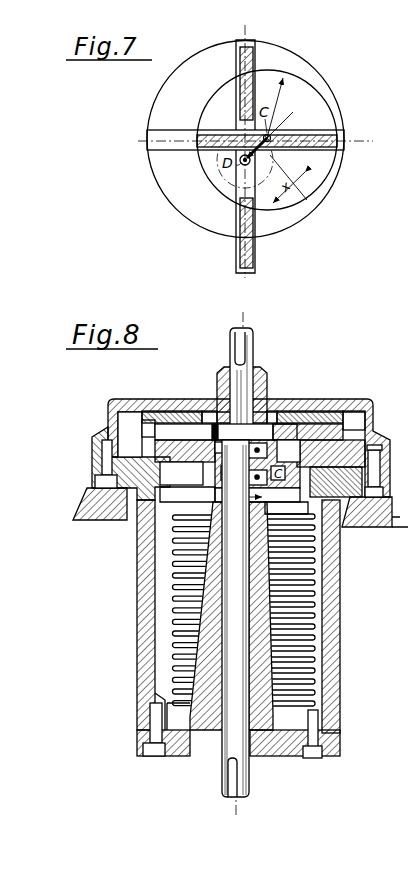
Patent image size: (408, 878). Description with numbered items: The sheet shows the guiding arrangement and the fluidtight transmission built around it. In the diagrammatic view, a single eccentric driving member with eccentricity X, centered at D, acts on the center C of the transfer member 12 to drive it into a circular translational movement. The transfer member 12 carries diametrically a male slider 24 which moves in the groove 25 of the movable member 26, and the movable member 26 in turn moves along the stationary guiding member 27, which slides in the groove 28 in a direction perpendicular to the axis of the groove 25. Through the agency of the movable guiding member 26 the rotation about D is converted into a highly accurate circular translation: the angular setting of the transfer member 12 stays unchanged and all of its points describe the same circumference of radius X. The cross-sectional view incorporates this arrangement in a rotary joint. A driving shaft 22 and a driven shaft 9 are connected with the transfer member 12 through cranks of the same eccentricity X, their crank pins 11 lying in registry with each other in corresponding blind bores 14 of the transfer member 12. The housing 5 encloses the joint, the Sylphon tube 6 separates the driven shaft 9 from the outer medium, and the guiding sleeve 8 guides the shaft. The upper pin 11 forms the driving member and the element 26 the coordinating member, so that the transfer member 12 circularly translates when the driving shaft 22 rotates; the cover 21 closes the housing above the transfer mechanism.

In FIG. 8, the housing 5 is at (145, 547).
In FIG. 8, the Sylphon tube 6 is at (182, 588).
In FIG. 8, the guiding sleeve 8 is at (210, 652).
In FIG. 8, the driven shaft 9 is at (233, 562).
In FIG. 8, the crank pin 11 is at (227, 471).
In FIG. 7, the transfer member 12 is at (327, 107).
In FIG. 8, the transfer member 12 is at (365, 446).
In FIG. 8, the blind bore 14 is at (273, 463).
In FIG. 8, the cover 21 is at (150, 402).
In FIG. 8, the driving shaft 22 is at (252, 340).
In FIG. 7, the male slider 24 is at (322, 142).
In FIG. 8, the male slider 24 is at (172, 433).
In FIG. 7, the groove 25 is at (157, 137).
In FIG. 8, the groove 25 is at (148, 428).
In FIG. 7, the movable member 26 is at (322, 77).
In FIG. 8, the movable member 26 is at (317, 418).
In FIG. 7, the stationary guiding member 27 is at (247, 58).
In FIG. 8, the stationary guiding member 27 is at (233, 428).
In FIG. 7, the groove 28 is at (243, 41).